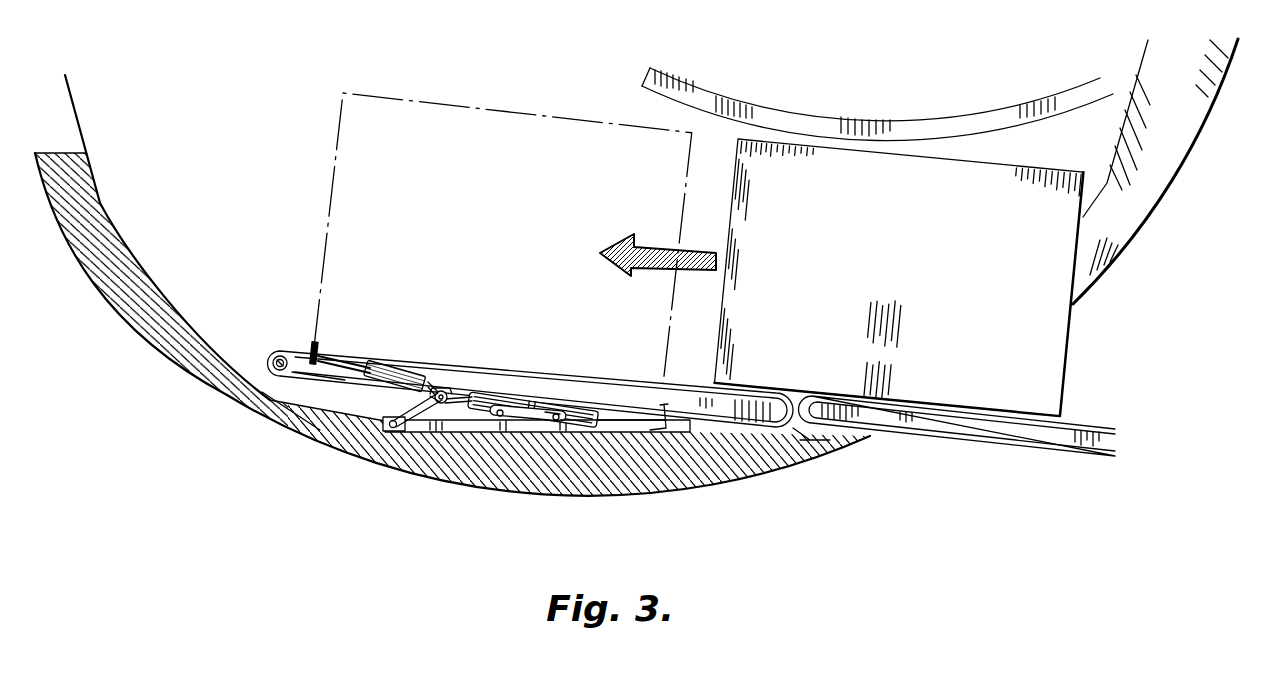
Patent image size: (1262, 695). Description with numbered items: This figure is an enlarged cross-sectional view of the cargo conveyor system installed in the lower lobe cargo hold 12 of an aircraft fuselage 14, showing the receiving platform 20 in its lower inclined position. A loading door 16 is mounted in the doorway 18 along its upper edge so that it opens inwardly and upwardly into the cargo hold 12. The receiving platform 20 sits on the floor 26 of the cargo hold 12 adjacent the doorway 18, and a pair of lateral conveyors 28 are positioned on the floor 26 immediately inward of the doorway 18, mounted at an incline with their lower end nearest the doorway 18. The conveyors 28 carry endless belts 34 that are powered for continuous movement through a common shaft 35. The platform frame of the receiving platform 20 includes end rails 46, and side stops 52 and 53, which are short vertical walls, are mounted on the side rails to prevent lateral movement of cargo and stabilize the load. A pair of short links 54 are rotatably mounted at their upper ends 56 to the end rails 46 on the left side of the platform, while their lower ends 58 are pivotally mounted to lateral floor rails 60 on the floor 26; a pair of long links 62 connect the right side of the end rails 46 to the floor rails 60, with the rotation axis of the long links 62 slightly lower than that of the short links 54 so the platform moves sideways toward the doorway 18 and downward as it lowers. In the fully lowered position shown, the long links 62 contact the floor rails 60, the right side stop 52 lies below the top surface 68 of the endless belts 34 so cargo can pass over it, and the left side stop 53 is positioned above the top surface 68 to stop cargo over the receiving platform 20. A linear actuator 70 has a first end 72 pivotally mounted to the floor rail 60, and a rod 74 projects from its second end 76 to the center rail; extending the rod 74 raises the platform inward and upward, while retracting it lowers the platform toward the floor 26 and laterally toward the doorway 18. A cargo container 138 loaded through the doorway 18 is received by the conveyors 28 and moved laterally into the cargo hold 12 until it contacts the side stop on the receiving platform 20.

The lower lobe cargo hold 12 is at (232, 183).
The aircraft fuselage 14 is at (157, 330).
The loading door 16 is at (935, 120).
The doorway 18 is at (1155, 168).
The receiving platform 20 is at (484, 397).
The floor 26 is at (792, 434).
The lateral conveyors 28 is at (830, 437).
The endless belts 34 is at (697, 395).
The common shaft 35 is at (276, 360).
The end rails 46 is at (340, 378).
The right side stop 52 is at (318, 343).
The left side stop 53 is at (715, 430).
The short links 54 is at (405, 404).
The upper ends of short links 56 is at (462, 392).
The lower ends of short links 58 is at (388, 428).
The lateral floor rails 60 is at (433, 432).
The long links 62 is at (600, 414).
The top surface of the endless belts 68 is at (305, 356).
The linear actuator 70 is at (505, 420).
The first end of linear actuator 72 is at (548, 420).
The rod 74 is at (441, 388).
The second end of linear actuator 76 is at (466, 412).
The cargo container 138 is at (447, 100).